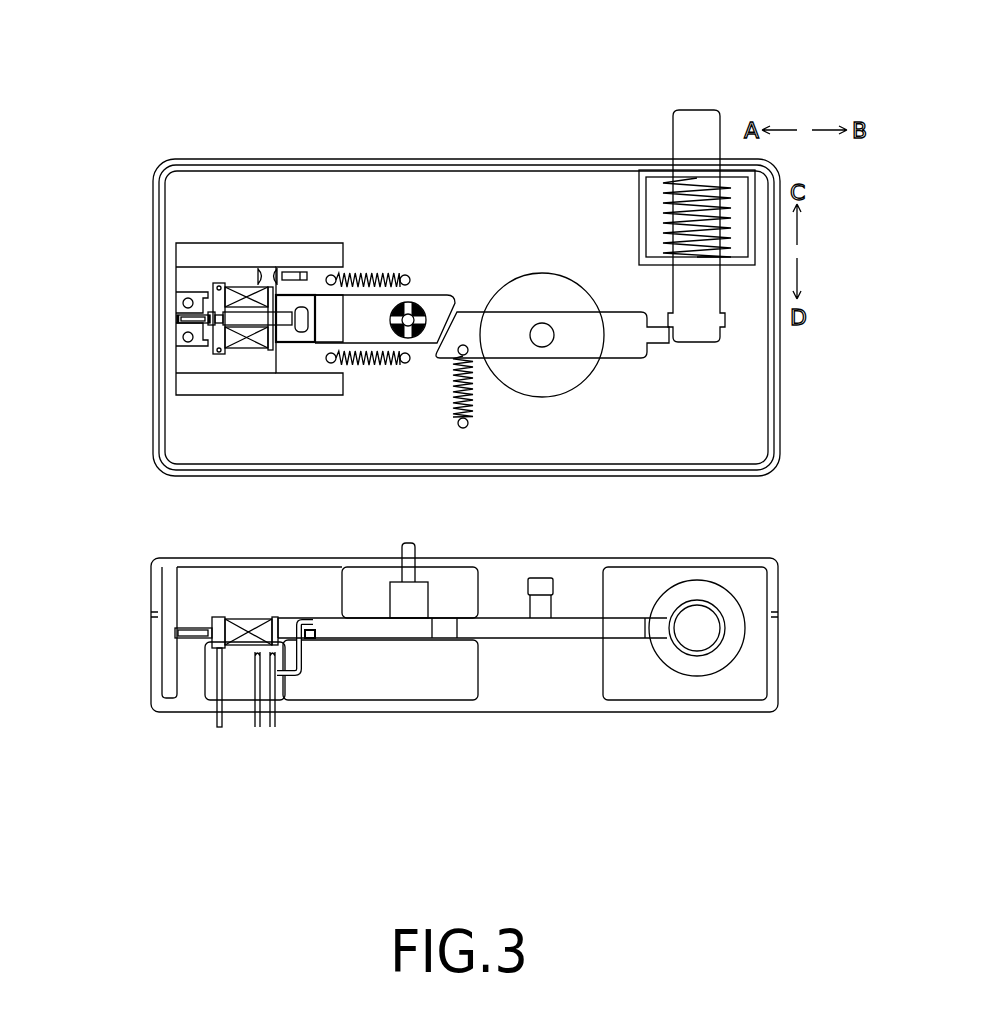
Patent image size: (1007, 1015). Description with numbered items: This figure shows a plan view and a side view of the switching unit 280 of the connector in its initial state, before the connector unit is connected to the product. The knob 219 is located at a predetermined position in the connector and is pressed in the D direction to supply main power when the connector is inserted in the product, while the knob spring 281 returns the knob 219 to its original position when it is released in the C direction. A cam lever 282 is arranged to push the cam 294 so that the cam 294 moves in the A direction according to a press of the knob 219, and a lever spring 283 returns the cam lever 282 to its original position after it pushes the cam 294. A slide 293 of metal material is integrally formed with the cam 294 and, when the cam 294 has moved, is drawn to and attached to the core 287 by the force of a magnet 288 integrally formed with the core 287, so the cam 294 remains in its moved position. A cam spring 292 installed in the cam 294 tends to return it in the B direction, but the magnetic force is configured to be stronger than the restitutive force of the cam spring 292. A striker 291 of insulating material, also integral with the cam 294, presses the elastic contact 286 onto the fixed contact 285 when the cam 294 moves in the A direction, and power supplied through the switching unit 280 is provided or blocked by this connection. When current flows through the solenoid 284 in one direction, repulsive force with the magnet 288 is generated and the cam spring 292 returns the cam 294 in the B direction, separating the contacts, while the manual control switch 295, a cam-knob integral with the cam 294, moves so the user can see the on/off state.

The knob 219 is at (695, 123).
The switching unit 280 is at (585, 167).
The knob spring 281 is at (665, 200).
The cam lever 282 is at (620, 325).
The lever spring 283 is at (465, 428).
The solenoid 284 is at (218, 352).
The fixed contact 285 is at (258, 272).
The elastic contact 286 is at (273, 273).
The core 287 is at (182, 297).
The magnet 288 is at (178, 317).
The striker 291 is at (291, 273).
The cam spring 292 is at (367, 358).
The slide 293 is at (308, 296).
The cam 294 is at (438, 300).
The manual control switch 295 is at (392, 328).